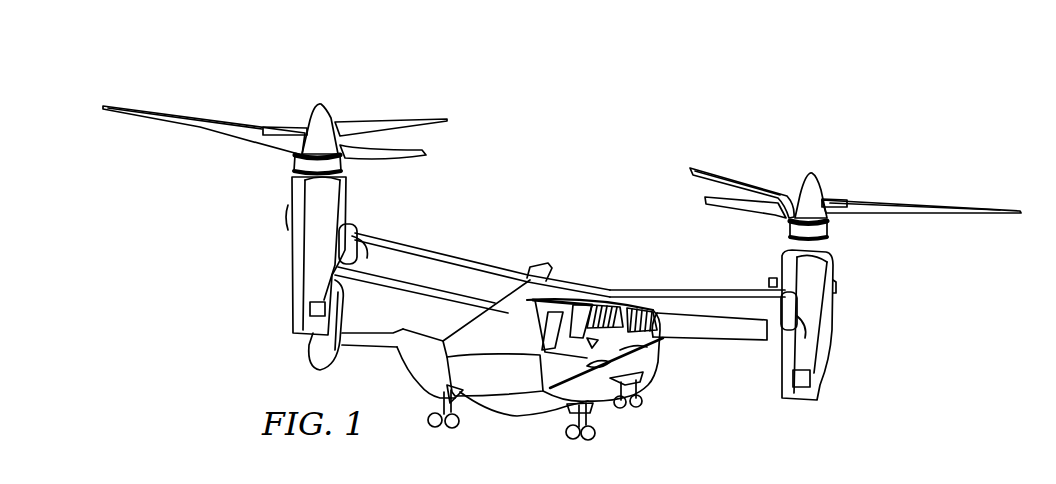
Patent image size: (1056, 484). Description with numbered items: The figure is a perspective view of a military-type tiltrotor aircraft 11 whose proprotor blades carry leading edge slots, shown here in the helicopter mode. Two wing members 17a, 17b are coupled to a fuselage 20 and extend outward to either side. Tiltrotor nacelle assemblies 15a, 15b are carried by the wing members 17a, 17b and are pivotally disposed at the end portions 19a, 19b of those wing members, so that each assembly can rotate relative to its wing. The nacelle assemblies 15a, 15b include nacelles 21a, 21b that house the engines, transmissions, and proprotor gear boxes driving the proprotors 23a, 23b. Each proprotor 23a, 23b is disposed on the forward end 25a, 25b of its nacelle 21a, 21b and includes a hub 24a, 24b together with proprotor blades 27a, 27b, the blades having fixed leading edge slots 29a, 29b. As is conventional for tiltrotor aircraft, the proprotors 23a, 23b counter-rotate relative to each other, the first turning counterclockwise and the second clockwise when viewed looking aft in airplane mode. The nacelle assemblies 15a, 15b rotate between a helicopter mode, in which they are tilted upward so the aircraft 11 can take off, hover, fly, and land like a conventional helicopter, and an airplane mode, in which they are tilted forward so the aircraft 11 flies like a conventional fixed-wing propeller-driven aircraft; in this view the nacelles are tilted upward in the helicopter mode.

The tiltrotor aircraft 11 is at (676, 94).
The tiltrotor nacelle assembly 15a is at (264, 213).
The tiltrotor nacelle assembly 15b is at (853, 292).
The wing member 17a is at (486, 266).
The wing member 17b is at (660, 291).
The end portion 19a is at (369, 238).
The end portion 19b is at (790, 332).
The fuselage 20 is at (518, 411).
The nacelle 21a is at (292, 260).
The nacelle 21b is at (817, 336).
The proprotor 23a is at (316, 86).
The proprotor 23b is at (820, 147).
The hub 24a is at (309, 125).
The hub 24b is at (815, 187).
The forward end 25a is at (346, 166).
The forward end 25b is at (792, 231).
The proprotor blades 27a is at (192, 117).
The proprotor blades 27b is at (730, 170).
The fixed leading edge slots 29a is at (282, 137).
The fixed leading edge slots 29b is at (847, 214).